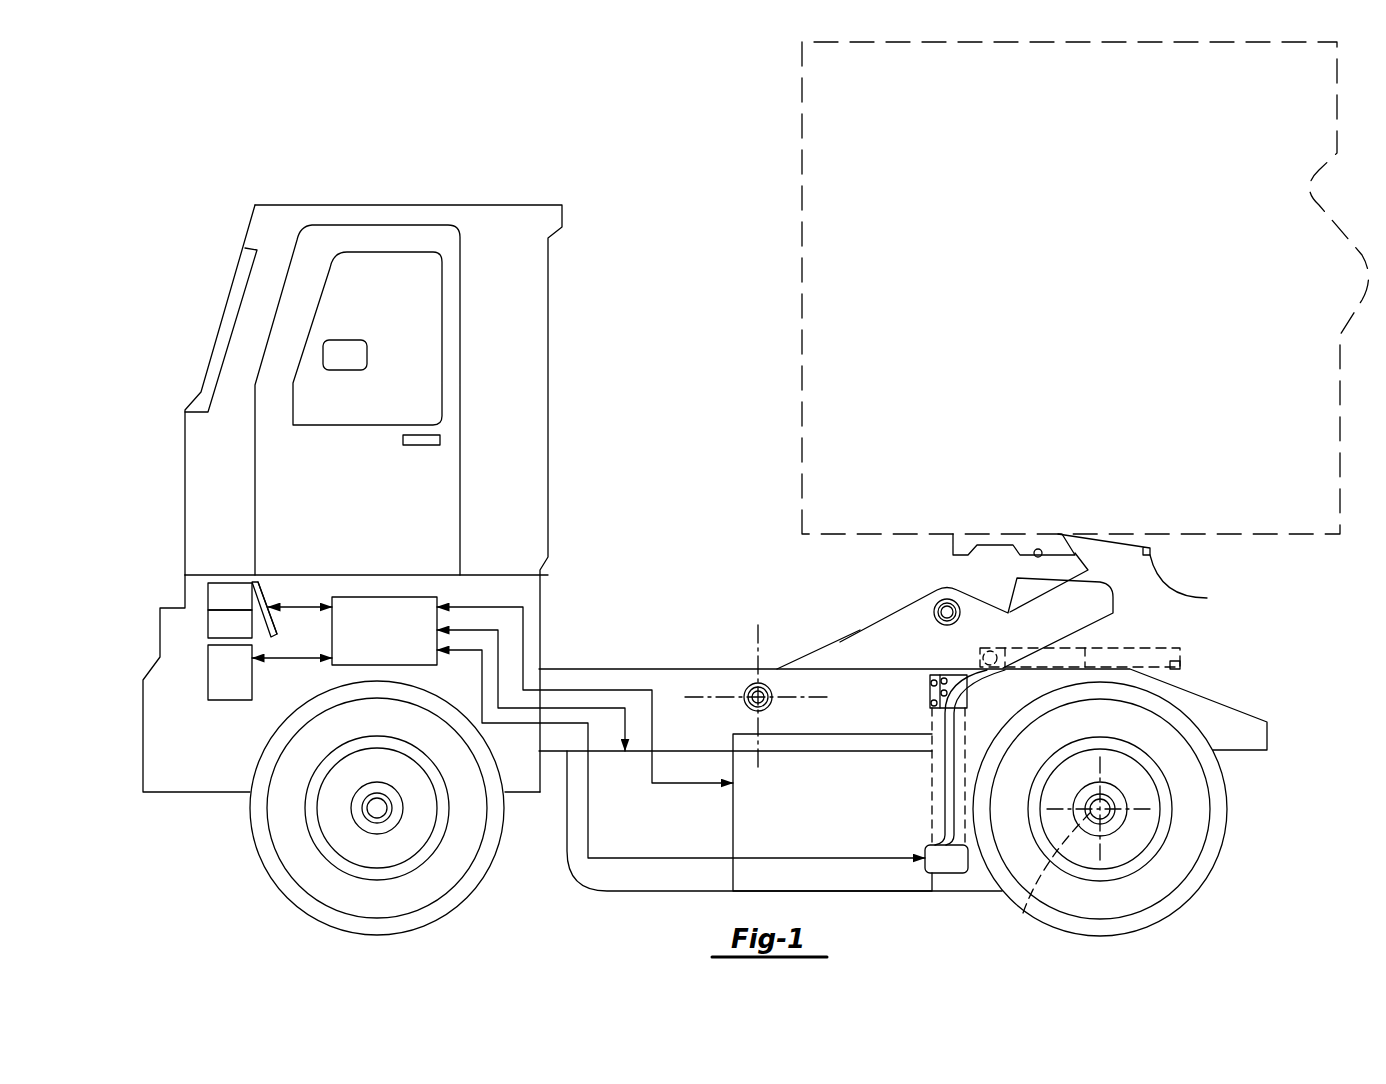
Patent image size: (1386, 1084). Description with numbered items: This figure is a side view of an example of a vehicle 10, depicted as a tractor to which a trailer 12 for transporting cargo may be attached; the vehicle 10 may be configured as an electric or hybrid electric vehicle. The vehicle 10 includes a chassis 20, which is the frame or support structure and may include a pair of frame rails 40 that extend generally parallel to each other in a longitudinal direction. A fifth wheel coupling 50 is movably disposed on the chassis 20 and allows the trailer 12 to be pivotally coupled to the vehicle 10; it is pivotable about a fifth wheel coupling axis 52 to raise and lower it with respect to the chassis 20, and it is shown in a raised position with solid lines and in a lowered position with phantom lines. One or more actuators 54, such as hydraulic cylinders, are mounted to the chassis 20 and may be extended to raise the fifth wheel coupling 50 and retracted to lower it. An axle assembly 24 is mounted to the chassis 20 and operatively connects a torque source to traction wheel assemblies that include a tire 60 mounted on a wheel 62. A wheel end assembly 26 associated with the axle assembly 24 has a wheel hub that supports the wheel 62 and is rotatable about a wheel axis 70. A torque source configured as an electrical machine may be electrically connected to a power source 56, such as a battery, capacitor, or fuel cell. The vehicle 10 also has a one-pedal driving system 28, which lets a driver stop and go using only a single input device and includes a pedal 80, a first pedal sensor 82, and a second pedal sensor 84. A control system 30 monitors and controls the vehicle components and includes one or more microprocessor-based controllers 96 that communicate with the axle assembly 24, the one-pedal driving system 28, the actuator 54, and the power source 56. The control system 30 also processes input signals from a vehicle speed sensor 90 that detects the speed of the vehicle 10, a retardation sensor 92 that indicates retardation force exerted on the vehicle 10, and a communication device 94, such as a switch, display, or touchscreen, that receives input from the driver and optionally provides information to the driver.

The vehicle 10 is at (590, 221).
The trailer 12 is at (1057, 163).
The chassis 20 is at (903, 681).
The frame rails 40 is at (668, 669).
The axle assembly 24 is at (844, 840).
The wheel end assembly 26 is at (1122, 830).
The one-pedal driving system 28 is at (249, 578).
The control system 30 is at (236, 713).
The fifth wheel coupling 50 is at (1143, 653).
The fifth wheel coupling axis 52 is at (757, 690).
The actuator 54 is at (930, 773).
The power source 56 is at (633, 837).
The tire 60 is at (1227, 815).
The wheel 62 is at (1128, 877).
The wheel axis 70 is at (1023, 913).
The pedal 80 is at (264, 597).
The first pedal sensor 82 is at (207, 602).
The second pedal sensor 84 is at (207, 620).
The vehicle speed sensor 90 is at (219, 684).
The retardation sensor 92 is at (936, 871).
The communication device 94 is at (345, 597).
The controller 96 is at (372, 636).